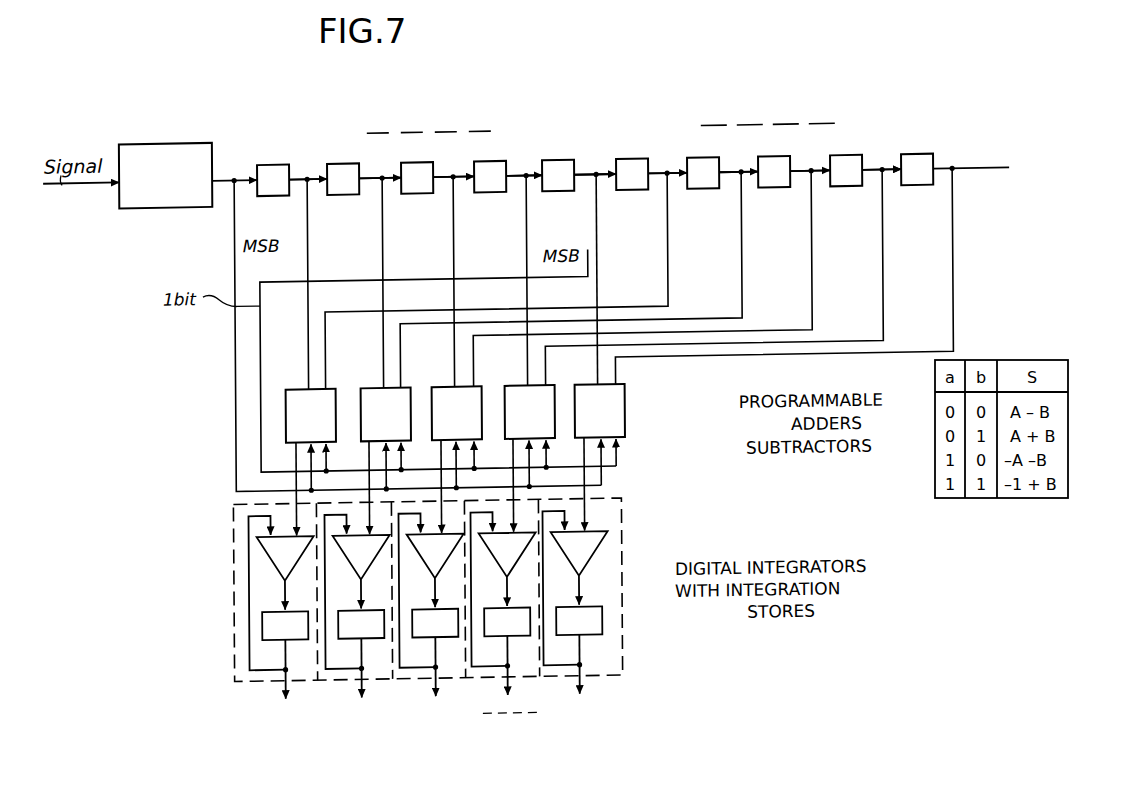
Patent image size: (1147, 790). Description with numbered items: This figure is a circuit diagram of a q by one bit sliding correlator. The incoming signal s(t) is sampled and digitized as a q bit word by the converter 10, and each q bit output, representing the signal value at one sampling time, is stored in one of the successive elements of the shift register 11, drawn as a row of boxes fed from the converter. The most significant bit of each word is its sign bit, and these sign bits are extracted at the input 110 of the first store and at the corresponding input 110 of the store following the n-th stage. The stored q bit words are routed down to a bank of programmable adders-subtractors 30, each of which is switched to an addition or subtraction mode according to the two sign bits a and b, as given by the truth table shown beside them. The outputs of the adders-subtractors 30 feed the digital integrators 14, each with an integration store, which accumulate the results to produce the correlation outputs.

The converter 10 is at (166, 141).
The shift register 11 is at (999, 129).
The input of store 110 is at (606, 203).
The adders-subtractors 30 is at (643, 403).
The digital integrators 14 is at (624, 542).